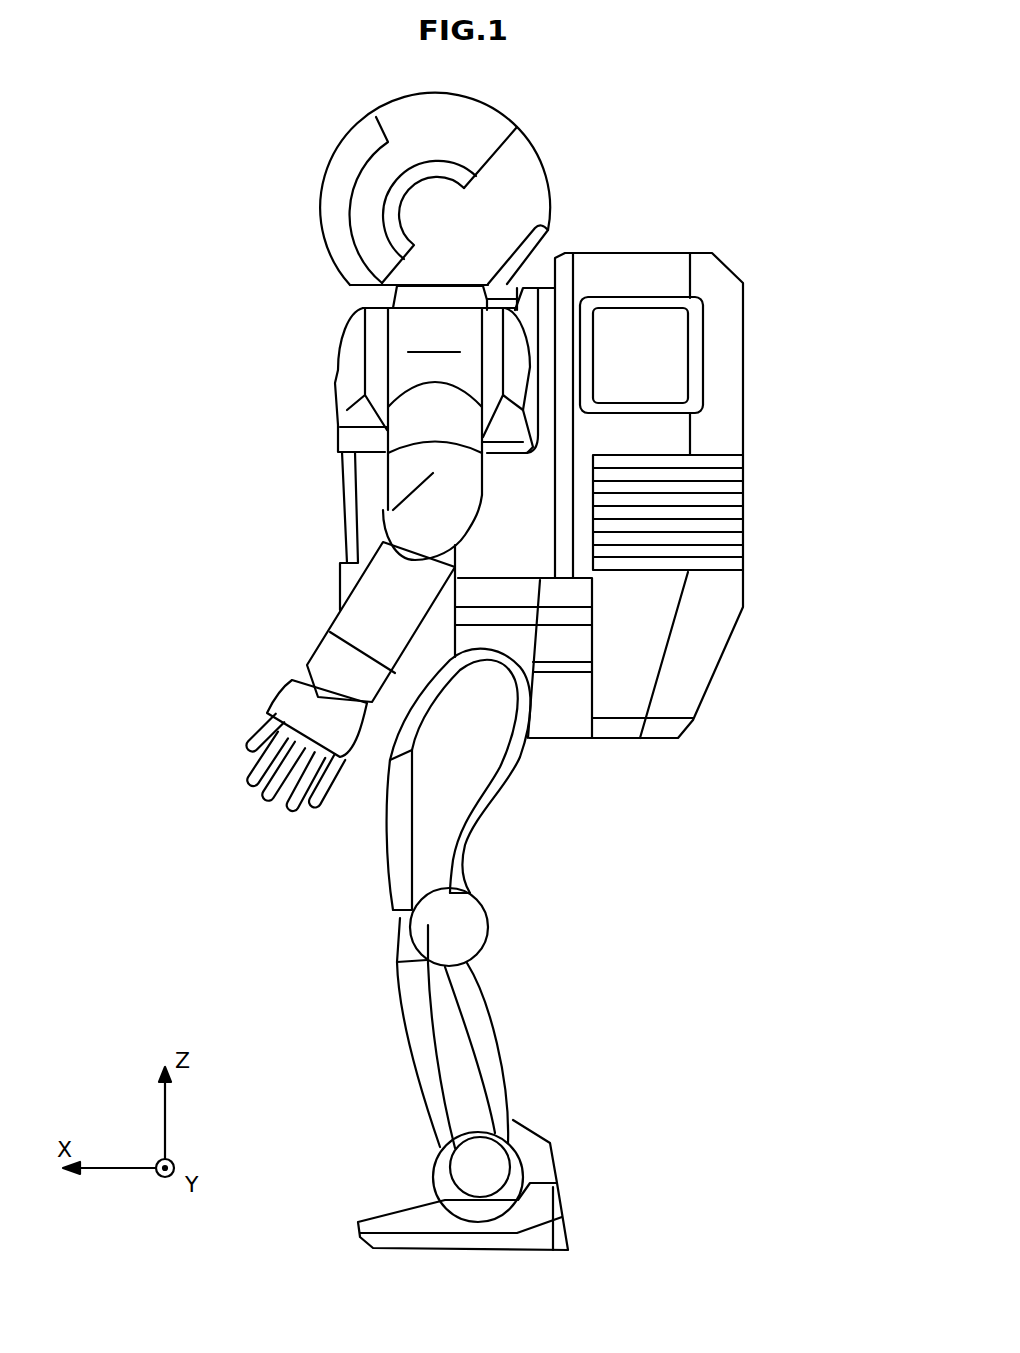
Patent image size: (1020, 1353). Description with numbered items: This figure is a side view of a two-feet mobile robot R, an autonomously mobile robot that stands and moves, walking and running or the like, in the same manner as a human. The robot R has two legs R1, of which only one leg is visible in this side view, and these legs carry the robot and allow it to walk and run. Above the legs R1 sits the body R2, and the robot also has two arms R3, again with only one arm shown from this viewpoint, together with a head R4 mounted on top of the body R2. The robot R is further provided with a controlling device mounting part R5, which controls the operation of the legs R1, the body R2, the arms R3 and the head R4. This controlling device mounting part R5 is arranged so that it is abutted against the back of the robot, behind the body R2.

The two-feet mobile robot R is at (168, 141).
The head R4 is at (321, 218).
The body R2 is at (336, 397).
The arm R3 is at (336, 598).
The controlling device mounting part R5 is at (618, 253).
The leg R1 is at (505, 1033).